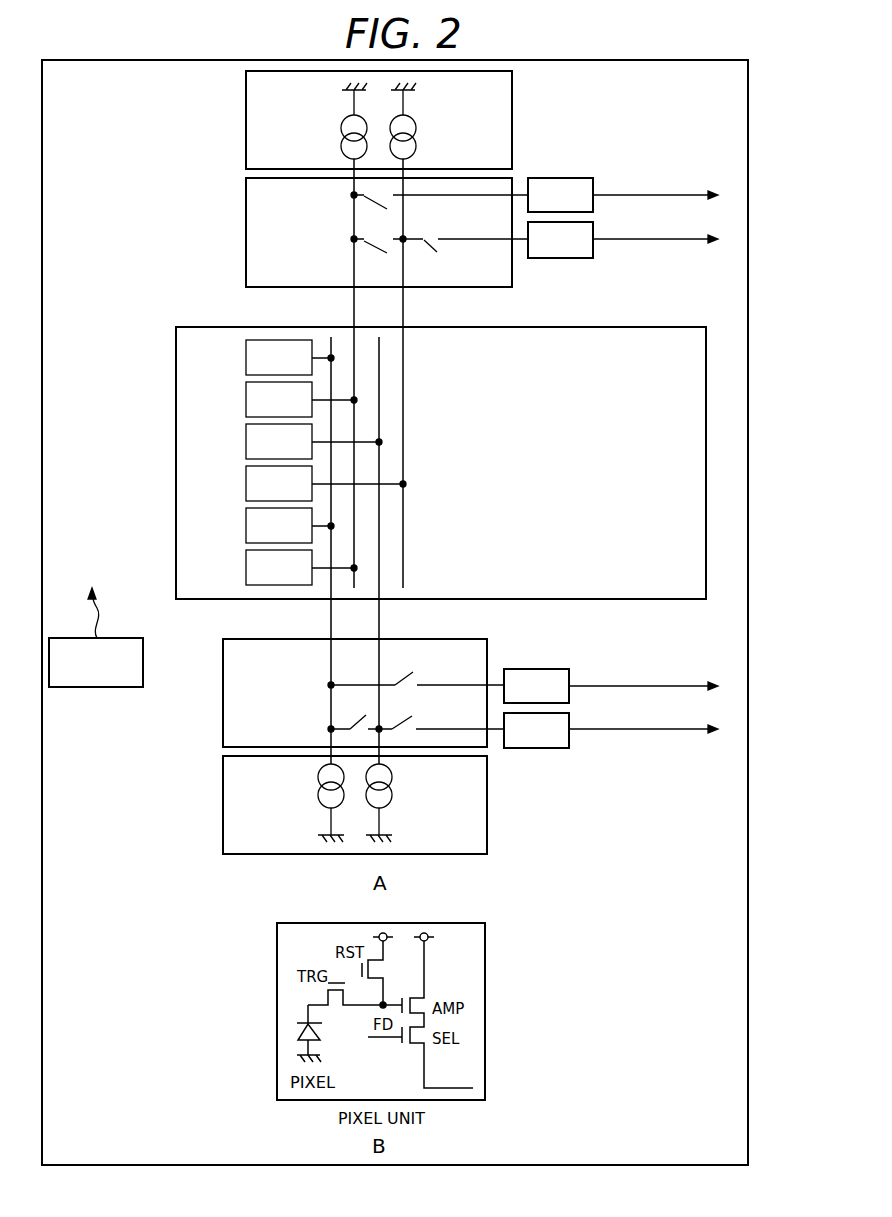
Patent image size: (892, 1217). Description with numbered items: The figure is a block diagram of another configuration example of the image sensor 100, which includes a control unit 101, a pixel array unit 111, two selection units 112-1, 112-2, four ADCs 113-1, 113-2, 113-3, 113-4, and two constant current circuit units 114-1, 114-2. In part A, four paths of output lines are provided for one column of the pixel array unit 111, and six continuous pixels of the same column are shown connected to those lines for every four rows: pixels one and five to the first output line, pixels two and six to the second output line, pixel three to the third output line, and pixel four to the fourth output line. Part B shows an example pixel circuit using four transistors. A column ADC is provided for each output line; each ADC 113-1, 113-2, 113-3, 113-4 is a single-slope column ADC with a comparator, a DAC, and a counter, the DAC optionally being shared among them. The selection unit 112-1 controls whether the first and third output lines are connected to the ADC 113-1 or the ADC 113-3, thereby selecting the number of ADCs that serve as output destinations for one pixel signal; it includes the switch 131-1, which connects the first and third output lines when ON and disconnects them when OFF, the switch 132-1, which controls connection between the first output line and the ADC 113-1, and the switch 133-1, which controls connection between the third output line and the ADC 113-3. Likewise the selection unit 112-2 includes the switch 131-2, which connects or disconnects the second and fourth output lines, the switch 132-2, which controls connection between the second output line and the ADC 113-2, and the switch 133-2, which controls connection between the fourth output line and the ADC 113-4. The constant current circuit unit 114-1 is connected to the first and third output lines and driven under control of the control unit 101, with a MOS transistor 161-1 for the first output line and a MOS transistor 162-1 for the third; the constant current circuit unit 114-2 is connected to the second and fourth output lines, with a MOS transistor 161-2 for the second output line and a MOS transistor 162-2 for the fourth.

The image sensor 100 is at (108, 792).
The control unit 101 is at (97, 687).
The pixel array unit 111 is at (176, 462).
The selection unit 112-1 is at (362, 734).
The selection unit 112-2 is at (345, 232).
The ADC 113-1 is at (539, 668).
The ADC 113-2 is at (563, 178).
The ADC 113-3 is at (538, 749).
The ADC 113-4 is at (562, 259).
The constant current circuit unit 114-1 is at (311, 805).
The constant current circuit unit 114-2 is at (336, 120).
The switch 131-1 is at (357, 716).
The switch 131-2 is at (364, 253).
The switch 132-1 is at (413, 672).
The switch 132-2 is at (382, 210).
The switch 133-1 is at (410, 718).
The switch 133-2 is at (433, 242).
The MOS transistor 161-1 is at (319, 807).
The MOS transistor 161-2 is at (345, 117).
The MOS transistor 162-1 is at (394, 807).
The MOS transistor 162-2 is at (412, 117).